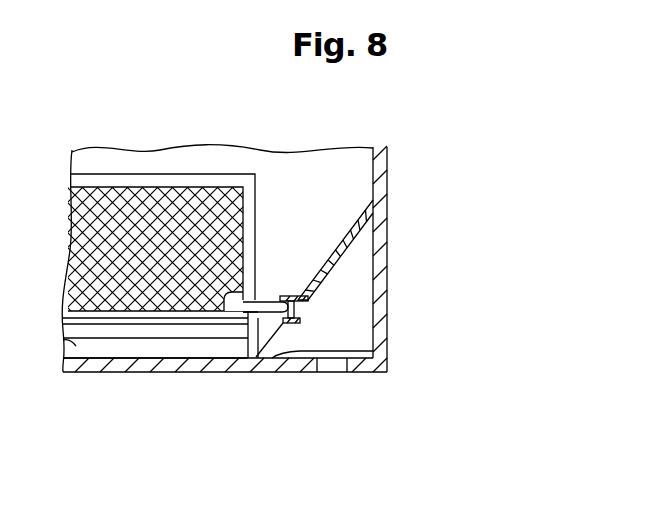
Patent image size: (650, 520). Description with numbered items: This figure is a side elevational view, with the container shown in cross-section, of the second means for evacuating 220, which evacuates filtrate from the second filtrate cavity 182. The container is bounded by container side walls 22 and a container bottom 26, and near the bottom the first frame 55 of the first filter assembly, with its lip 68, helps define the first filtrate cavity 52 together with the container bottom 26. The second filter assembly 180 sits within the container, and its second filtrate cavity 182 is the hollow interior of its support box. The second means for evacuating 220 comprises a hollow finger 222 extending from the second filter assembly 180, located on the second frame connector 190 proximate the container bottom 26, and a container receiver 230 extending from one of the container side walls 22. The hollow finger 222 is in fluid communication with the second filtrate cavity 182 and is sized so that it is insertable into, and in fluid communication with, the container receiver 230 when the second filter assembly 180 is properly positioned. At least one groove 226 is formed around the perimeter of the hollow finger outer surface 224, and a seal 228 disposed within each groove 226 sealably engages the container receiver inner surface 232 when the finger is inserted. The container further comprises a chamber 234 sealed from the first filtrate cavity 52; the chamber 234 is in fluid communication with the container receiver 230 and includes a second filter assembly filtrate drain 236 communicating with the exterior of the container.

The second filter assembly 180 is at (186, 166).
The second frame connector 190 is at (256, 186).
The container side walls 22 is at (387, 216).
The chamber 234 is at (361, 240).
The container receiver inner surface 232 is at (315, 301).
The groove 226 is at (310, 300).
The seal 228 is at (296, 314).
The hollow finger outer surface 224 is at (373, 351).
The hollow finger 222 is at (262, 300).
The container receiver 230 is at (278, 300).
The lip 68 is at (63, 316).
The first frame 55 is at (65, 349).
The first filtrate cavity 52 is at (113, 348).
The container bottom 26 is at (150, 372).
The second filtrate cavity 182 is at (238, 300).
The second filter assembly filtrate drain 236 is at (336, 372).
The second means for evacuating 220 is at (282, 412).